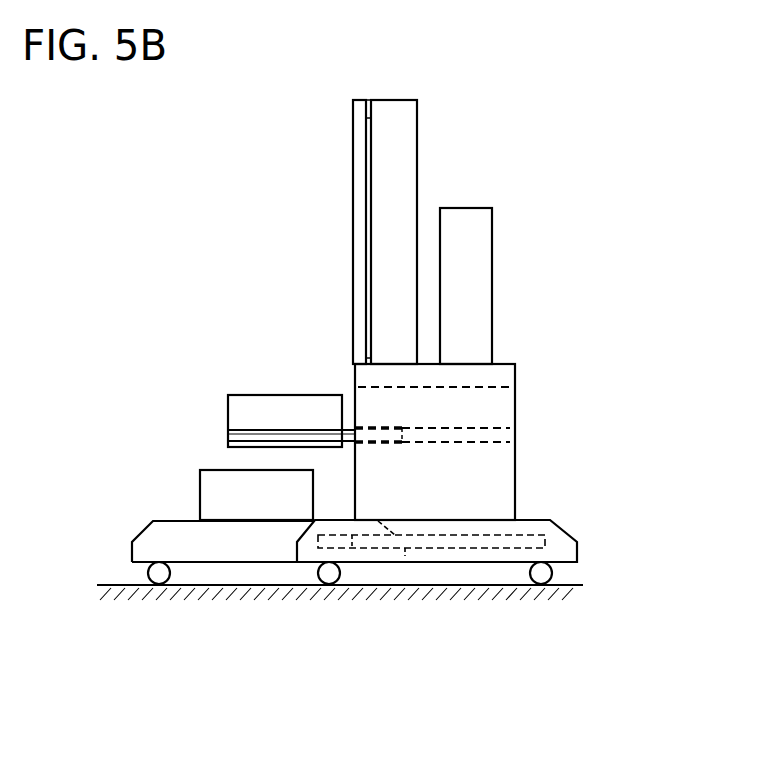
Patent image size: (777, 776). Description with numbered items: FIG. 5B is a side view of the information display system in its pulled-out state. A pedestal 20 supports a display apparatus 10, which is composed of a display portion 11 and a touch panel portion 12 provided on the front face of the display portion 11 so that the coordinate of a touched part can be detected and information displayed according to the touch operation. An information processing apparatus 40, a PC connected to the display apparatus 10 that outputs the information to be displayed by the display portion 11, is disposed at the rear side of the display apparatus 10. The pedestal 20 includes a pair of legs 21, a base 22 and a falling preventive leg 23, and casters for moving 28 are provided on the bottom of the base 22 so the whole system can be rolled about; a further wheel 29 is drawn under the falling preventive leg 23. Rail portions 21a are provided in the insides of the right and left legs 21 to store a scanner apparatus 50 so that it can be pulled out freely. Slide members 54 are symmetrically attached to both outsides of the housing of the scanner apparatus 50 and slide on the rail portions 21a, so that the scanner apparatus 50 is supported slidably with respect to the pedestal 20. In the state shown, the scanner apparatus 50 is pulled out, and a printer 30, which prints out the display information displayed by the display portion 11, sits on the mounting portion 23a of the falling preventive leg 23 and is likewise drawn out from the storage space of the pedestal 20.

The display apparatus 10 is at (360, 196).
The display portion 11 is at (391, 207).
The touch panel portion 12 is at (353, 148).
The information processing apparatus 40 is at (470, 208).
The pedestal 20 is at (465, 463).
The leg 21 is at (465, 442).
The rail portion 21a is at (455, 442).
The base 22 is at (578, 550).
The falling preventive leg 23 is at (193, 516).
The mounting portion 23a is at (177, 520).
The caster for moving 28 is at (330, 586).
The caster wheel 29 is at (160, 586).
The printer 30 is at (200, 482).
The scanner apparatus 50 is at (284, 395).
The slide member 54 is at (228, 434).